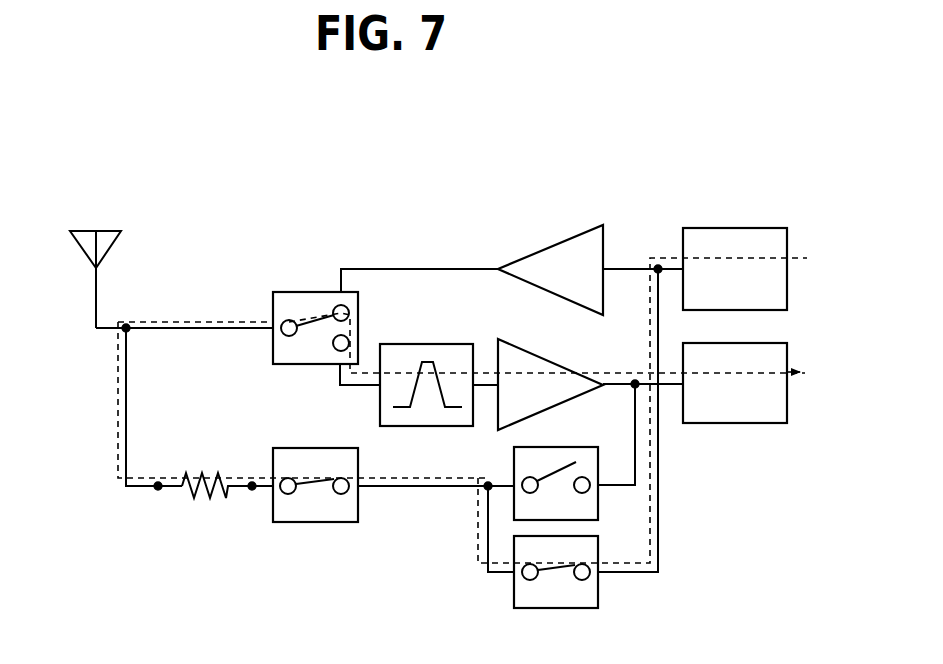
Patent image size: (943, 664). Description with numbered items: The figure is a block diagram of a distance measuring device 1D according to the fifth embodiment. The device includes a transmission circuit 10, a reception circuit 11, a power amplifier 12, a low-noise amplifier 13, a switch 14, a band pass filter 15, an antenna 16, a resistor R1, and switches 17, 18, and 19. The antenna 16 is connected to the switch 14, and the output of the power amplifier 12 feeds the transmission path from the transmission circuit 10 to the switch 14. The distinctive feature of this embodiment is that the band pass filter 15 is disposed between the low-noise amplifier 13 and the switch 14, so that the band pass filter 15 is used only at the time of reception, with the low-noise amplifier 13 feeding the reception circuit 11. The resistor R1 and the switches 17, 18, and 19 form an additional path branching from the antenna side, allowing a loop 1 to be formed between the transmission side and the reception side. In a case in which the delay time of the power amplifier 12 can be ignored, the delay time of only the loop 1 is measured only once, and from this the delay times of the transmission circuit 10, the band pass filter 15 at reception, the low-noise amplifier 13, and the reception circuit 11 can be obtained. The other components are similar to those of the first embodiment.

The distance measuring device 1D is at (470, 157).
The loop 1 is at (652, 256).
The transmission circuit 10 is at (733, 228).
The reception circuit 11 is at (737, 423).
The power amplifier 12 is at (553, 246).
The low-noise amplifier 13 is at (552, 353).
The switch 14 is at (318, 292).
The band pass filter 15 is at (428, 344).
The antenna 16 is at (113, 231).
The switch 17 is at (317, 448).
The switch 18 is at (598, 502).
The switch 19 is at (598, 588).
The resistor R1 is at (227, 473).